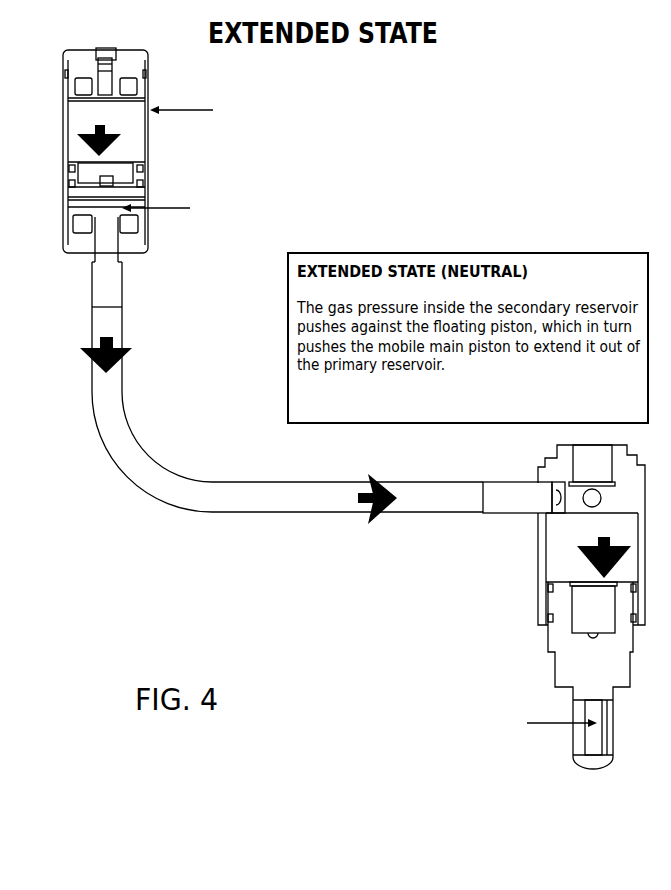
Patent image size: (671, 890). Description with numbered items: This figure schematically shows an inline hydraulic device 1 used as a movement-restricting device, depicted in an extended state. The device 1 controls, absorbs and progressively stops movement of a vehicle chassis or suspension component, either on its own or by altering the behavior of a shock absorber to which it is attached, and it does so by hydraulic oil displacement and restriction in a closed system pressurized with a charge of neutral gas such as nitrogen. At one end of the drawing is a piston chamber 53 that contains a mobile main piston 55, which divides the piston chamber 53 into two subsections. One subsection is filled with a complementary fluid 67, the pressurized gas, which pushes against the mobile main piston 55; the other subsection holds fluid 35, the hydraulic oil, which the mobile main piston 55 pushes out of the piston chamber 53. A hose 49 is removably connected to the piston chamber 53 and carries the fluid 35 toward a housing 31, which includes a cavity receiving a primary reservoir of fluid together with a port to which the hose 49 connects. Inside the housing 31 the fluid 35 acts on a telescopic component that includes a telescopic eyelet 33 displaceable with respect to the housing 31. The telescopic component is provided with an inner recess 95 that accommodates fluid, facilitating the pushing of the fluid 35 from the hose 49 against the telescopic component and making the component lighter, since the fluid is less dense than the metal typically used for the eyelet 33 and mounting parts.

The inline hydraulic device 1 is at (450, 609).
The housing 31 is at (531, 608).
The telescopic eyelet 33 is at (569, 665).
The fluid 35 is at (561, 553).
The hose 49 is at (146, 489).
The piston chamber 53 is at (278, 155).
The mobile main piston 55 is at (130, 171).
The complementary fluid 67 is at (130, 138).
The inner recess 95 is at (602, 613).